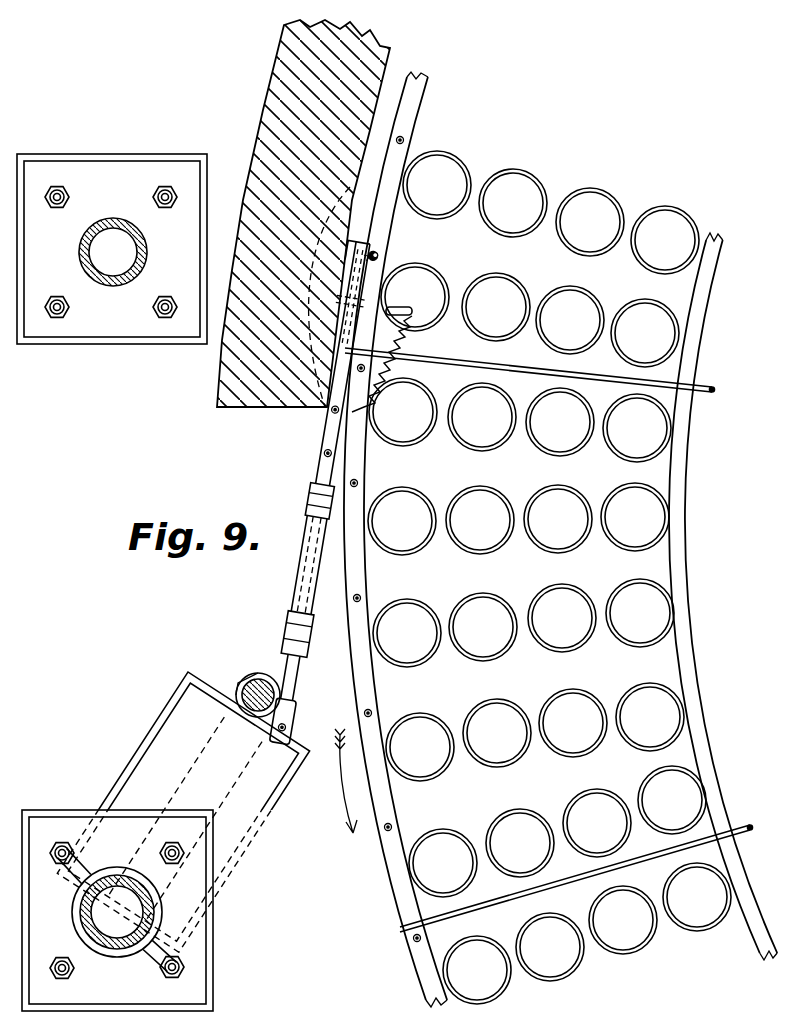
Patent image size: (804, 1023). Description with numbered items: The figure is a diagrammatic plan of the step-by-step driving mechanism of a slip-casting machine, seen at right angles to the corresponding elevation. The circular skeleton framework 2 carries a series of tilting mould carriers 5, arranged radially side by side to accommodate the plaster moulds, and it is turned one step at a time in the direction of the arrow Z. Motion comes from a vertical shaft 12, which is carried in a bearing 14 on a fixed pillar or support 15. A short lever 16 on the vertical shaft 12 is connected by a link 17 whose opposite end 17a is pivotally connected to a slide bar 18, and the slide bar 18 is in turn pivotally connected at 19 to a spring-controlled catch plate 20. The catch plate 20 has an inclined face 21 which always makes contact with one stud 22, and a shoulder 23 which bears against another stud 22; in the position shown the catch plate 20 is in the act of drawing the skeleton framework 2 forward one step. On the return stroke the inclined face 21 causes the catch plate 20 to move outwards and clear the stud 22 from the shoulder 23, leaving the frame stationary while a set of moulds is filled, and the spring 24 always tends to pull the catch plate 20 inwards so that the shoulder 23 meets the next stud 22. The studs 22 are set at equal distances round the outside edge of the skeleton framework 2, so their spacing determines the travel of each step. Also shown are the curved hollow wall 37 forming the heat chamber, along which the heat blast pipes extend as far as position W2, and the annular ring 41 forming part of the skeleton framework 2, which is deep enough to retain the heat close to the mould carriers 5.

The skeleton framework 2 is at (690, 388).
The mould carriers 5 is at (560, 290).
The vertical shaft 12 is at (245, 682).
The bearing 14 is at (203, 678).
The fixed pillar or support 15 is at (144, 912).
The short lever 16 is at (299, 724).
The link 17 is at (372, 694).
The opposite end of link 17a is at (291, 454).
The slide bar 18 is at (280, 676).
The pivot connection 19 is at (359, 414).
The spring-controlled catch plate 20 is at (353, 281).
The inclined face 21 is at (381, 265).
The studs 22 is at (404, 140).
The shoulder 23 is at (384, 372).
The spring 24 is at (400, 350).
The hollow wall 37 is at (272, 108).
The annular ring 41 is at (708, 240).
The position W² W2 is at (715, 348).
The arrow Z is at (347, 800).